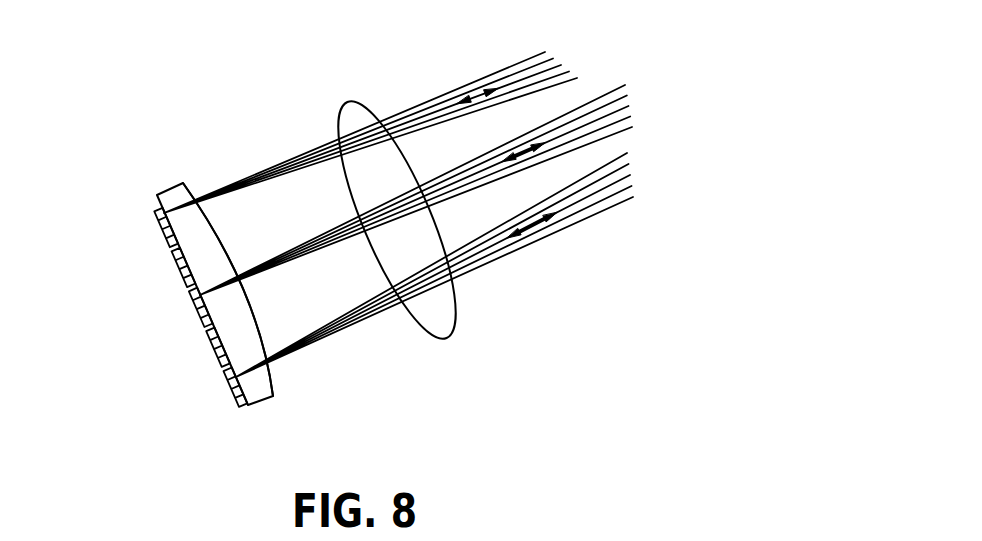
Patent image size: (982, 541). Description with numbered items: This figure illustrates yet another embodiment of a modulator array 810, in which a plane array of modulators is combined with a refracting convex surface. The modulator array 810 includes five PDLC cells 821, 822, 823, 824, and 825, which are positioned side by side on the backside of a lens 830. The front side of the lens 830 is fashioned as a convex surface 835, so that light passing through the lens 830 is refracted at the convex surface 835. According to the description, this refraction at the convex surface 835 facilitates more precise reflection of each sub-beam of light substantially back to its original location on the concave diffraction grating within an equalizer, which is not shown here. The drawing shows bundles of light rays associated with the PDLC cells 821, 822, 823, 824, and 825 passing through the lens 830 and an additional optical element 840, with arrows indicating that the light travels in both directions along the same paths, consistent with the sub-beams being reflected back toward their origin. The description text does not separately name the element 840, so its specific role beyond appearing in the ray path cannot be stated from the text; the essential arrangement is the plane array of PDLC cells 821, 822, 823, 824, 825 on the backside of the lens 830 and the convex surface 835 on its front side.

The modulator array 810 is at (153, 83).
The PDLC cell 821 is at (156, 228).
The PDLC cell 822 is at (173, 265).
The PDLC cell 823 is at (191, 304).
The PDLC cell 824 is at (209, 345).
The PDLC cell 825 is at (227, 381).
The lens 830 is at (260, 388).
The convex surface 835 is at (253, 313).
The lens 840 is at (348, 101).